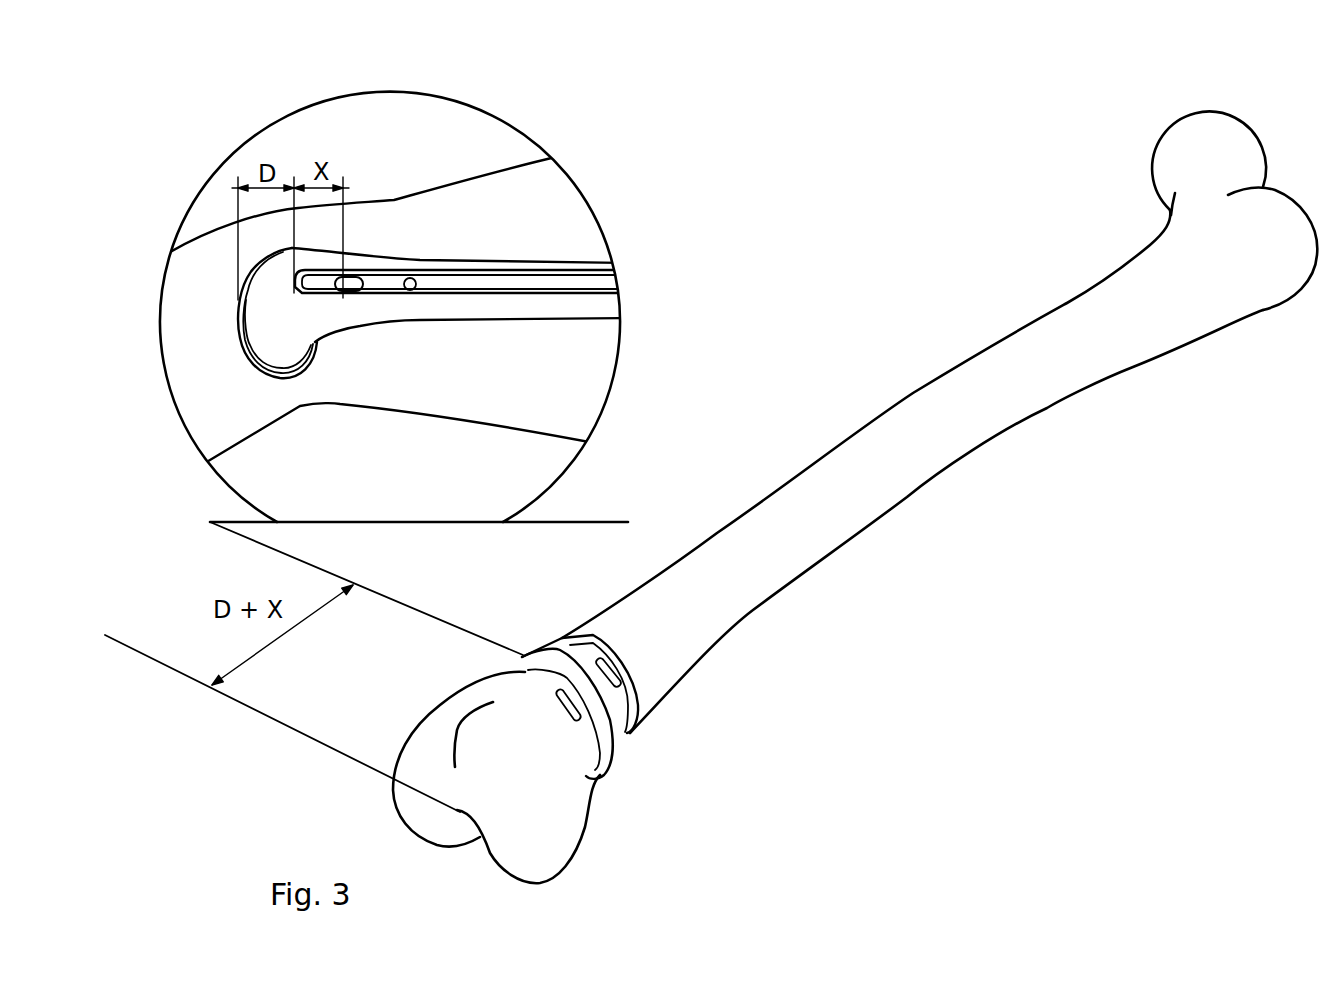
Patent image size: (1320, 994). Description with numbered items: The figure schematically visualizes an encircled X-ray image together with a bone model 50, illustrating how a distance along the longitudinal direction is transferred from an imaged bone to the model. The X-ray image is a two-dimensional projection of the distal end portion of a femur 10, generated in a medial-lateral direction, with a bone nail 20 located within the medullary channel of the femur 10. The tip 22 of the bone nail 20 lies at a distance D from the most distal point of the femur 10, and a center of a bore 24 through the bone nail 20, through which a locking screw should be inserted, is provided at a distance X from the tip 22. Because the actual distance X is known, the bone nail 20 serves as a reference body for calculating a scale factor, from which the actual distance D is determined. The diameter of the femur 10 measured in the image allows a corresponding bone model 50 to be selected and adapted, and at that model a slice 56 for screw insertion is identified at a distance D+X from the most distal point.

The femur 10 is at (513, 255).
The bone nail 20 is at (598, 299).
The tip 22 is at (292, 285).
The bore 24 is at (350, 282).
The bone model 50 is at (913, 503).
The slice 56 is at (622, 758).